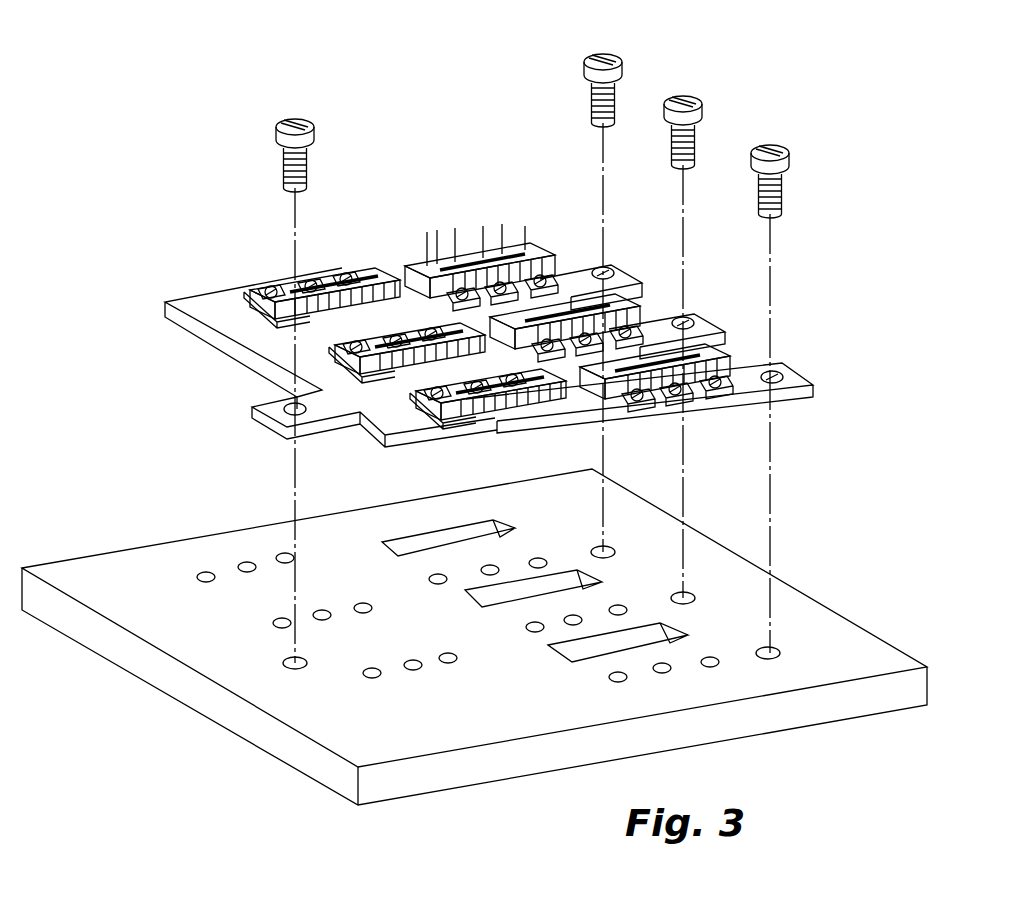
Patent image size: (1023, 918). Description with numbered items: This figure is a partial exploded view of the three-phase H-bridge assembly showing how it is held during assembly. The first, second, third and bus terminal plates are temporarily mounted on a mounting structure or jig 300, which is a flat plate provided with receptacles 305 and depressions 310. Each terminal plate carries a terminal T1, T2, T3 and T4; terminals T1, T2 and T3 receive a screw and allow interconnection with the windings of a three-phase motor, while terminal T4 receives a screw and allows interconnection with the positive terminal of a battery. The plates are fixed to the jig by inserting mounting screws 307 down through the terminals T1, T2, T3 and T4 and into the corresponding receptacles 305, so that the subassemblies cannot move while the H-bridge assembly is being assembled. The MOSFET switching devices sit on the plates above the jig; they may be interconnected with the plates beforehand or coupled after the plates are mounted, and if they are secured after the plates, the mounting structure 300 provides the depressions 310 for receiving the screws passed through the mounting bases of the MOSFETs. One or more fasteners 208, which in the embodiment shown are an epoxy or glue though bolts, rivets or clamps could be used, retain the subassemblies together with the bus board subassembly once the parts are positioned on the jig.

The mounting structure 300 is at (896, 641).
The receptacles 305 is at (288, 660).
The mounting screws 307 is at (310, 128).
The depressions 310 is at (378, 677).
The fasteners 208 is at (314, 280).
The terminal T1 is at (616, 274).
The terminal T2 is at (737, 277).
The terminal T3 is at (850, 340).
The terminal T4 is at (284, 407).